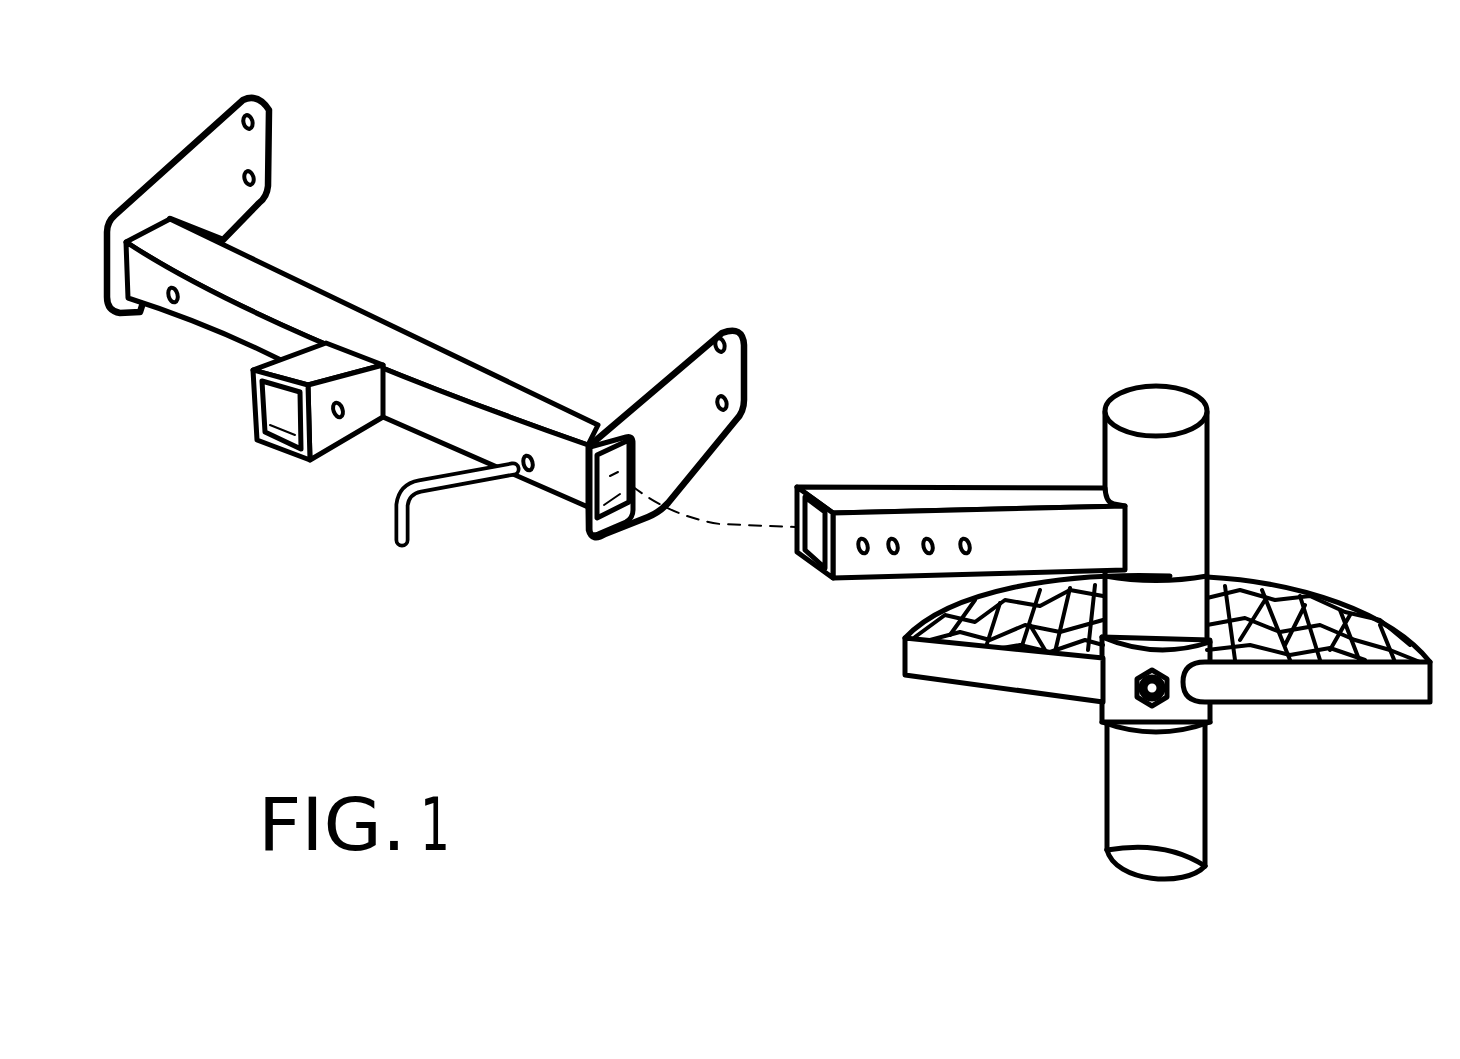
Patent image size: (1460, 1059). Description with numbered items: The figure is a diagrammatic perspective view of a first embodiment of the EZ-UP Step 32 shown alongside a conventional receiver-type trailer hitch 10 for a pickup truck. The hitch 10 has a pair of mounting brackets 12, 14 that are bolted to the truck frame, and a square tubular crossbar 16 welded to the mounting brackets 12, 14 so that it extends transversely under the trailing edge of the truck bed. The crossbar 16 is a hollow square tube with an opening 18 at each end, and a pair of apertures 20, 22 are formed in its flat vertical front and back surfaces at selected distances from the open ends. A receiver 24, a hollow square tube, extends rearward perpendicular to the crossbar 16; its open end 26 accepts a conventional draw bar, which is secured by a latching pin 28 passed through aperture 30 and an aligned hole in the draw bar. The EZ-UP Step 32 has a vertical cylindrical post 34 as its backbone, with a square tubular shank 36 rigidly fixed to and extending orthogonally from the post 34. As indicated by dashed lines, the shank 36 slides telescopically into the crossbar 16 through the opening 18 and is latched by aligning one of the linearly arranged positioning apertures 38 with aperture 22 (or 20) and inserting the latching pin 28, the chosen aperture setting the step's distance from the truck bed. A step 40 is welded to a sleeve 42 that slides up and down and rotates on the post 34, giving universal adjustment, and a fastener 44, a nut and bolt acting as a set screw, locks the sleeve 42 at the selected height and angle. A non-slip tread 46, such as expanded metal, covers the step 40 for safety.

The trailer hitch 10 is at (553, 250).
The mounting bracket 12 is at (240, 152).
The mounting bracket 14 is at (675, 362).
The crossbar 16 is at (427, 363).
The opening 18 is at (625, 523).
The aperture 20 is at (168, 303).
The aperture 22 is at (540, 503).
The receiver 24 is at (309, 371).
The open end 26 is at (273, 440).
The latching pin 28 is at (397, 510).
The aperture 30 is at (345, 420).
The EZ-UP Step 32 is at (1080, 372).
The post 34 is at (1183, 457).
The shank 36 is at (961, 520).
The positioning apertures 38 is at (923, 568).
The step 40 is at (1127, 647).
The sleeve 42 is at (1167, 713).
The fastener 44 is at (1125, 698).
The non-slip tread 46 is at (1262, 623).